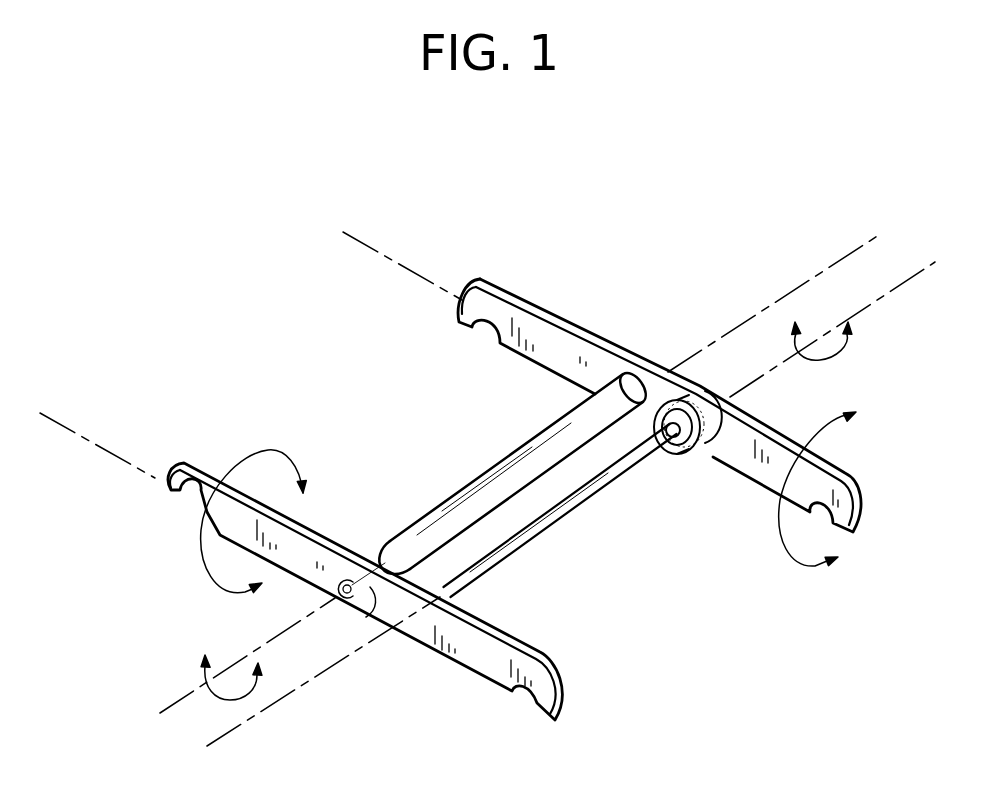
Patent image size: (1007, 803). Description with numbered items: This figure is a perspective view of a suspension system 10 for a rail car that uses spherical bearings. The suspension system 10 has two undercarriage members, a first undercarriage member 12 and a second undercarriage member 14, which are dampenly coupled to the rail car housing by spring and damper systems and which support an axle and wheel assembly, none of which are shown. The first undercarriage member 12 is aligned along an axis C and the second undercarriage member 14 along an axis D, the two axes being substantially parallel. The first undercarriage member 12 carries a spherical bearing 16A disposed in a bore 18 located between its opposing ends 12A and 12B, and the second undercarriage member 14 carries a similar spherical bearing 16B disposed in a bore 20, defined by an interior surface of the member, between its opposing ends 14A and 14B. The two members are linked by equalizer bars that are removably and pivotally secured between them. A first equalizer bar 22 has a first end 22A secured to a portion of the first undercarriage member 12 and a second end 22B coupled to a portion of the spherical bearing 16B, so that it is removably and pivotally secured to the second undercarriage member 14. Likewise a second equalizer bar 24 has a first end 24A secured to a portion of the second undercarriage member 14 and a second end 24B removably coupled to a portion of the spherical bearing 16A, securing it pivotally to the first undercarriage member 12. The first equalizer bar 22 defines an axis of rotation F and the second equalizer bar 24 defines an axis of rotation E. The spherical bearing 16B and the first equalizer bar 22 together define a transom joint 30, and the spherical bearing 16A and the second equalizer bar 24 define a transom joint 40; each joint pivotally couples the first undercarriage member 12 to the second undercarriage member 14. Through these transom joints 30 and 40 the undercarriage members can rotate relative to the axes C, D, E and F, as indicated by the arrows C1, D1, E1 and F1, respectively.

The suspension system 10 is at (881, 188).
The first undercarriage member 12 is at (532, 295).
The end of first undercarriage member 12A is at (452, 275).
The end of first undercarriage member 12B is at (880, 485).
The second undercarriage member 14 is at (203, 463).
The end of second undercarriage member 14A is at (138, 490).
The end of second undercarriage member 14B is at (583, 688).
The spherical bearing 16A is at (693, 482).
The spherical bearing 16B is at (388, 523).
The bore 18 is at (683, 392).
The bore 20 is at (370, 612).
The first equalizer bar 22 is at (515, 429).
The first end of first equalizer bar 22A is at (605, 374).
The second end of first equalizer bar 22B is at (413, 525).
The second equalizer bar 24 is at (520, 557).
The first end of second equalizer bar 24A is at (474, 601).
The second end of second equalizer bar 24B is at (657, 489).
The transom joint 30 is at (361, 532).
The transom joint 40 is at (618, 392).
The axis C is at (378, 248).
The axis D is at (80, 440).
The axis of rotation E is at (913, 280).
The axis of rotation F is at (805, 282).
The arrow C1 is at (787, 565).
The arrow D1 is at (205, 575).
The arrow E1 is at (850, 348).
The arrow F1 is at (205, 677).